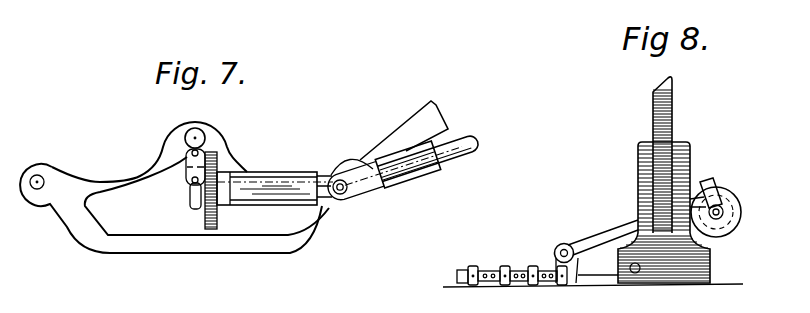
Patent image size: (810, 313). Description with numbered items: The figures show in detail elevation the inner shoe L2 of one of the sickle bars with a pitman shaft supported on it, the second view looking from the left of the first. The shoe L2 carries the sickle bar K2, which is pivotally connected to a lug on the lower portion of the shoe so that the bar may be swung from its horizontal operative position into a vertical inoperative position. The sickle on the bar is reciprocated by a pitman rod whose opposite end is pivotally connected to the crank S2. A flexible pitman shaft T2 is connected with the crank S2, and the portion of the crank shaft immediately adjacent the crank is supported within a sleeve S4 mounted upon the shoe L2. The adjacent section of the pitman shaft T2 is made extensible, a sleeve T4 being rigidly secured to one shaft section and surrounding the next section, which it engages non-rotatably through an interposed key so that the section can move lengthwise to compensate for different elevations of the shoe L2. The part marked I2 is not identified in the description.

In FIG. 7, the shoe L2 is at (207, 142).
In FIG. 8, the shoe L2 is at (708, 258).
In FIG. 7, the crank S2 is at (211, 212).
In FIG. 8, the crank S2 is at (595, 235).
In FIG. 7, the sleeve S4 is at (300, 171).
In FIG. 7, the pitman shaft T2 is at (455, 141).
In FIG. 7, the sleeve T4 is at (413, 145).
In FIG. 8, the post I2 is at (664, 119).
In FIG. 8, the sickle bar K2 is at (598, 288).